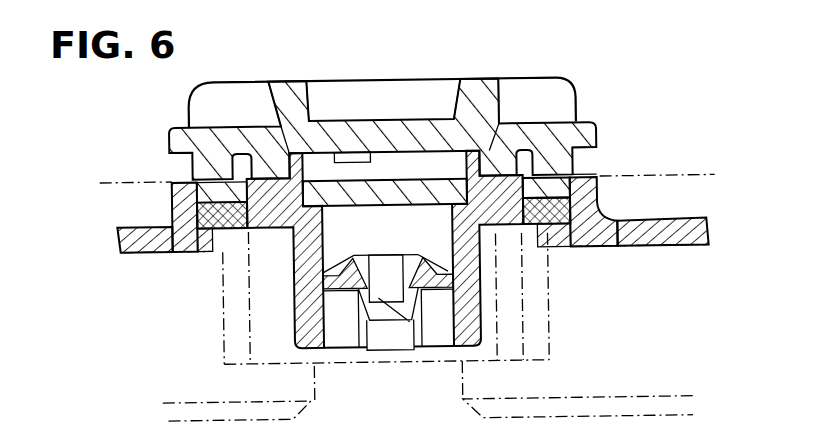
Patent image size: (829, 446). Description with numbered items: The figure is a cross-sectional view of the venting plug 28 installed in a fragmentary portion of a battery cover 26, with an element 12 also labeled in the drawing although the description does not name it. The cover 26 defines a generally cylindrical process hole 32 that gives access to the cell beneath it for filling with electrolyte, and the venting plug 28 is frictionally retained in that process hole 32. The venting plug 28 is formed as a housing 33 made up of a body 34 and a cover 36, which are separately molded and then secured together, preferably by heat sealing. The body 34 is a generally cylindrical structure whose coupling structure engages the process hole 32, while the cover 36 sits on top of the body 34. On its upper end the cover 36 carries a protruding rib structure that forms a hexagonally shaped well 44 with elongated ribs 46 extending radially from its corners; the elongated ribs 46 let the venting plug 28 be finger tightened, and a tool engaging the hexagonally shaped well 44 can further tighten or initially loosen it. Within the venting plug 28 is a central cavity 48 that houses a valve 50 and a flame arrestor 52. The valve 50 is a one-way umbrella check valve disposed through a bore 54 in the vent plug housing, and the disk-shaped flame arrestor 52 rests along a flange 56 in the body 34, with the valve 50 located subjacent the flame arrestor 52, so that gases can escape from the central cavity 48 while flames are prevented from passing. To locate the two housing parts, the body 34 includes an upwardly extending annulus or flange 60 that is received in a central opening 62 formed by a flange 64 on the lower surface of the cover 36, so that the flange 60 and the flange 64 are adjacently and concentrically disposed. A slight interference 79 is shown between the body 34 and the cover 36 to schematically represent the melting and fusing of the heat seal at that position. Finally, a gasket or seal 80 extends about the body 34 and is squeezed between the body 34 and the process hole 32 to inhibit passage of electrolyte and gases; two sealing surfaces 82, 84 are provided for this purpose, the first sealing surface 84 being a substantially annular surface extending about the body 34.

The valve body 12 is at (277, 80).
The cover 26 is at (703, 238).
The venting plug 28 is at (614, 74).
The process hole 32 is at (170, 203).
The housing 33 is at (170, 153).
The body 34 is at (547, 177).
The cover 36 is at (363, 79).
The hexagonally shaped well 44 is at (327, 78).
The elongated ribs 46 is at (495, 78).
The central cavity 48 is at (447, 220).
The valve 50 is at (412, 350).
The flame arrestor 52 is at (383, 210).
The bore 54 is at (365, 350).
The flange 56 is at (450, 153).
The flange 60 is at (262, 81).
The central opening 62 is at (430, 157).
The flange 64 is at (500, 160).
The interference 79 is at (577, 172).
The seal 80 is at (587, 205).
The sealing surface 82 is at (210, 247).
The first sealing surface 84 is at (226, 249).